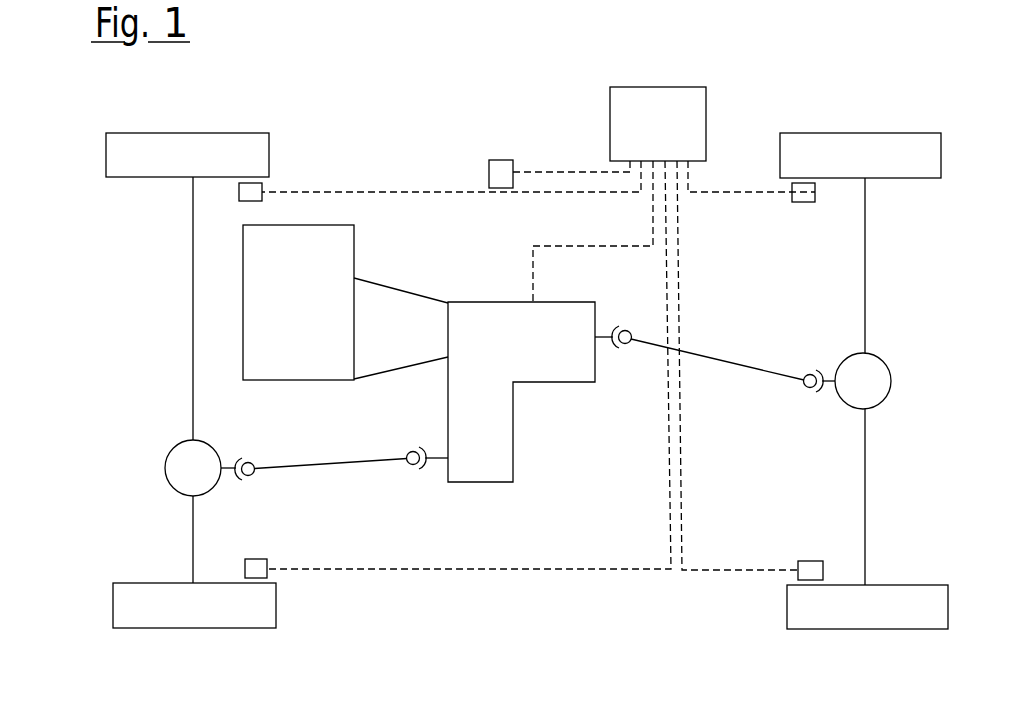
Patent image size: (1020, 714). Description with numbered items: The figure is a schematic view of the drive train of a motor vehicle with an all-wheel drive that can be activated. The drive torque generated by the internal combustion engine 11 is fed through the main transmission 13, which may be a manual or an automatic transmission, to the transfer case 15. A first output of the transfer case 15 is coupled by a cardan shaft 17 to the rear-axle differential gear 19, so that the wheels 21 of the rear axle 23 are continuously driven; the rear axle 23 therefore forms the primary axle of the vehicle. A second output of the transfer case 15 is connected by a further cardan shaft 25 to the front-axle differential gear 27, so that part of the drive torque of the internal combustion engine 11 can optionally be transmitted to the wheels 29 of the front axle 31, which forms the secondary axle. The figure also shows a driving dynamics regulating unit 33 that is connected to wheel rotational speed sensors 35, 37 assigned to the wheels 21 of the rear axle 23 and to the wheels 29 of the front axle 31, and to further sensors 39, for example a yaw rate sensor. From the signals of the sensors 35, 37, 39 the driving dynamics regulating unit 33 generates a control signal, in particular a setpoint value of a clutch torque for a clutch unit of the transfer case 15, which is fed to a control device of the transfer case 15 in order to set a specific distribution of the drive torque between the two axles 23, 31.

The internal combustion engine 11 is at (286, 313).
The main transmission 13 is at (381, 343).
The transfer case 15 is at (504, 353).
The cardan shaft 17 is at (718, 357).
The rear-axle differential gear 19 is at (890, 372).
The wheels 21 is at (913, 132).
The rear axle 23 is at (910, 285).
The cardan shaft 25 is at (330, 463).
The front-axle differential gear 27 is at (165, 460).
The wheels 29 is at (130, 133).
The front axle 31 is at (166, 349).
The driving dynamics regulating unit 33 is at (644, 135).
The wheel rotational speed sensors 35 is at (803, 202).
The wheel rotational speed sensors 37 is at (238, 191).
The further sensors 39 is at (498, 160).